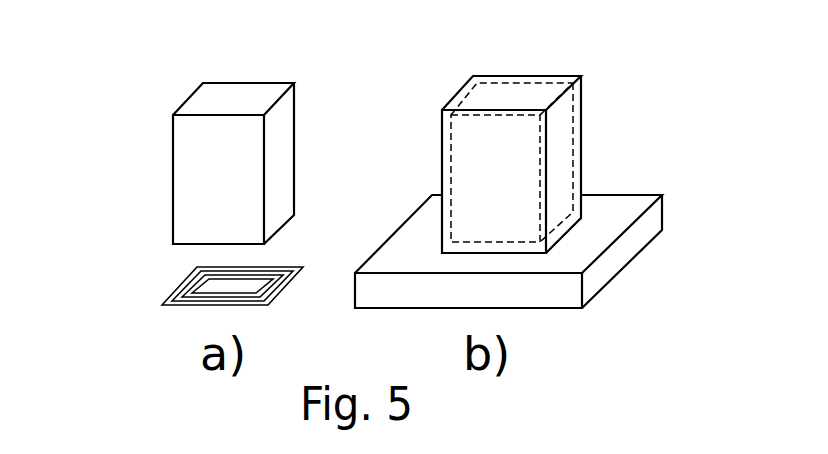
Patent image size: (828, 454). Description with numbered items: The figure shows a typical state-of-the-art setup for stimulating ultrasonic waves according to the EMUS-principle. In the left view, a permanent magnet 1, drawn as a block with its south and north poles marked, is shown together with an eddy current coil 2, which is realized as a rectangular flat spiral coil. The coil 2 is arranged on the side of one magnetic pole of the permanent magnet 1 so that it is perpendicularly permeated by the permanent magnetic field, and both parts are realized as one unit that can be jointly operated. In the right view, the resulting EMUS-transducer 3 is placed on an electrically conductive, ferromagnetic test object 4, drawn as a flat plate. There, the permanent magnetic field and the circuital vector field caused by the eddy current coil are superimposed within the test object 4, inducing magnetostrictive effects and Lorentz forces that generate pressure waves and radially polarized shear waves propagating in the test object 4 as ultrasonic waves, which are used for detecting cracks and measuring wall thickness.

The permanent magnet 1 is at (178, 82).
The eddy current coil 2 is at (183, 305).
The EMUS-transducer 3 is at (610, 73).
The test object 4 is at (608, 257).